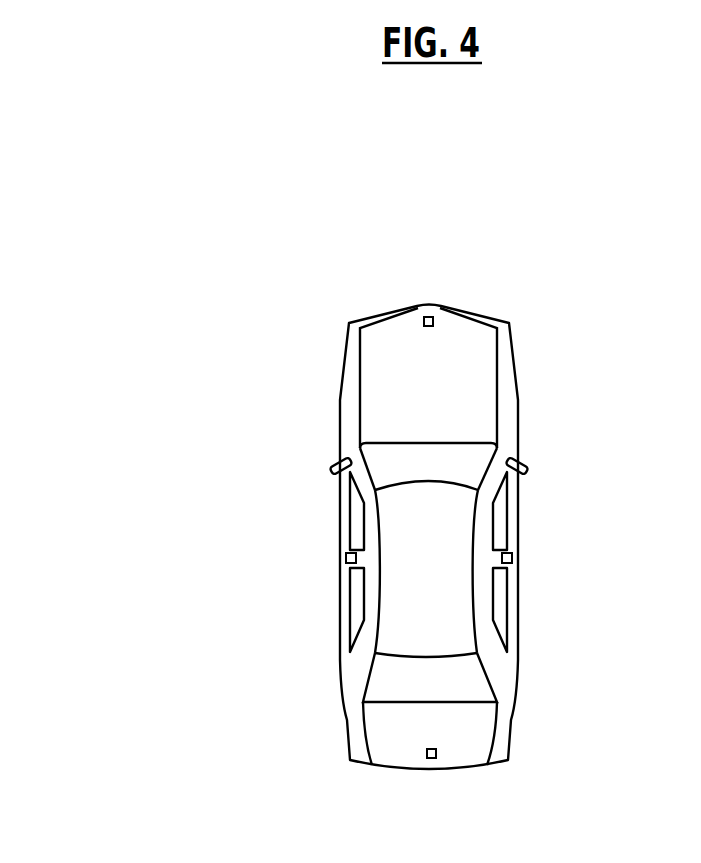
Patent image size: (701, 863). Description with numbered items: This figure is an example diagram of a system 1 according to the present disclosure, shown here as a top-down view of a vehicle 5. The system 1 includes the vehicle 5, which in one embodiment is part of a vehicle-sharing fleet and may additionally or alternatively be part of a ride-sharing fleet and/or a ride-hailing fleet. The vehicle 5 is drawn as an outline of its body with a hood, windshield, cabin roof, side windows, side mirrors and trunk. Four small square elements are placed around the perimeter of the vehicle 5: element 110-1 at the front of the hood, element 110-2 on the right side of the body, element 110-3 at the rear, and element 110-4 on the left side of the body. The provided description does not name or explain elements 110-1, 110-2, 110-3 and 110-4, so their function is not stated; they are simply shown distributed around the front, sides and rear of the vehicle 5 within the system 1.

The system 1 is at (97, 289).
The vehicle 5 is at (347, 352).
The front sensor 110-1 is at (429, 317).
The right side sensor 110-2 is at (513, 557).
The rear sensor 110-3 is at (430, 759).
The left side sensor 110-4 is at (345, 558).